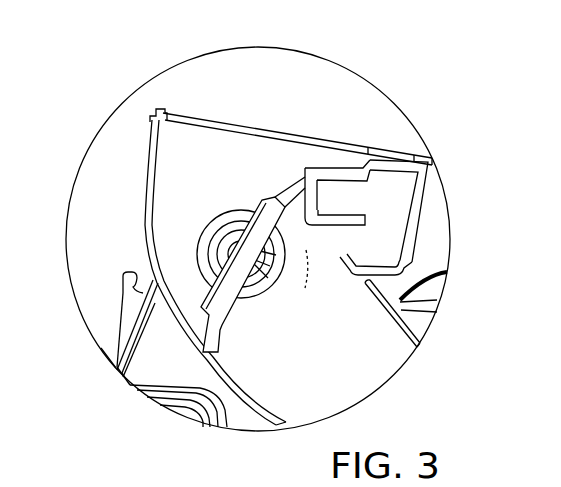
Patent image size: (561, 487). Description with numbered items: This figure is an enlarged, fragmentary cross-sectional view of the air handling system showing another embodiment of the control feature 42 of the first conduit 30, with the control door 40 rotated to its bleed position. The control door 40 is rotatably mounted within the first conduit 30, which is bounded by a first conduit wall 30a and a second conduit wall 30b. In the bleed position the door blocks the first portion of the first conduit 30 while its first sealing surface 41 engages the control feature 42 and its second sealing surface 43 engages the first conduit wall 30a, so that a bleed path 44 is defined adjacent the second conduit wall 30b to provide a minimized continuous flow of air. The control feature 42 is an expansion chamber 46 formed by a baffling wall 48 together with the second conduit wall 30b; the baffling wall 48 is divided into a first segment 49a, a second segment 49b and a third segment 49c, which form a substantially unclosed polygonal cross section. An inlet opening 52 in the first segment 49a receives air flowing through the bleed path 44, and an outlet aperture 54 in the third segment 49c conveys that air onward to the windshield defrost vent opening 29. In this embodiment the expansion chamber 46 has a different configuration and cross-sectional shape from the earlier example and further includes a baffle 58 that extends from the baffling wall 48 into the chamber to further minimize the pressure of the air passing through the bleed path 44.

The windshield defrost vent opening 29 is at (175, 116).
The first conduit 30 is at (150, 156).
The first conduit wall 30a is at (160, 246).
The second conduit wall 30b is at (342, 255).
The control door 40 is at (252, 252).
The first sealing surface 41 is at (305, 170).
The control feature 42 is at (323, 167).
The second sealing surface 43 is at (235, 345).
The bleed path 44 is at (312, 235).
The expansion chamber 46 is at (280, 199).
The baffling wall 48 is at (310, 170).
The first segment 49a is at (320, 200).
The second segment 49b is at (317, 183).
The third segment 49c is at (322, 175).
The inlet opening 52 is at (333, 226).
The outlet aperture 54 is at (343, 182).
The baffle 58 is at (330, 212).